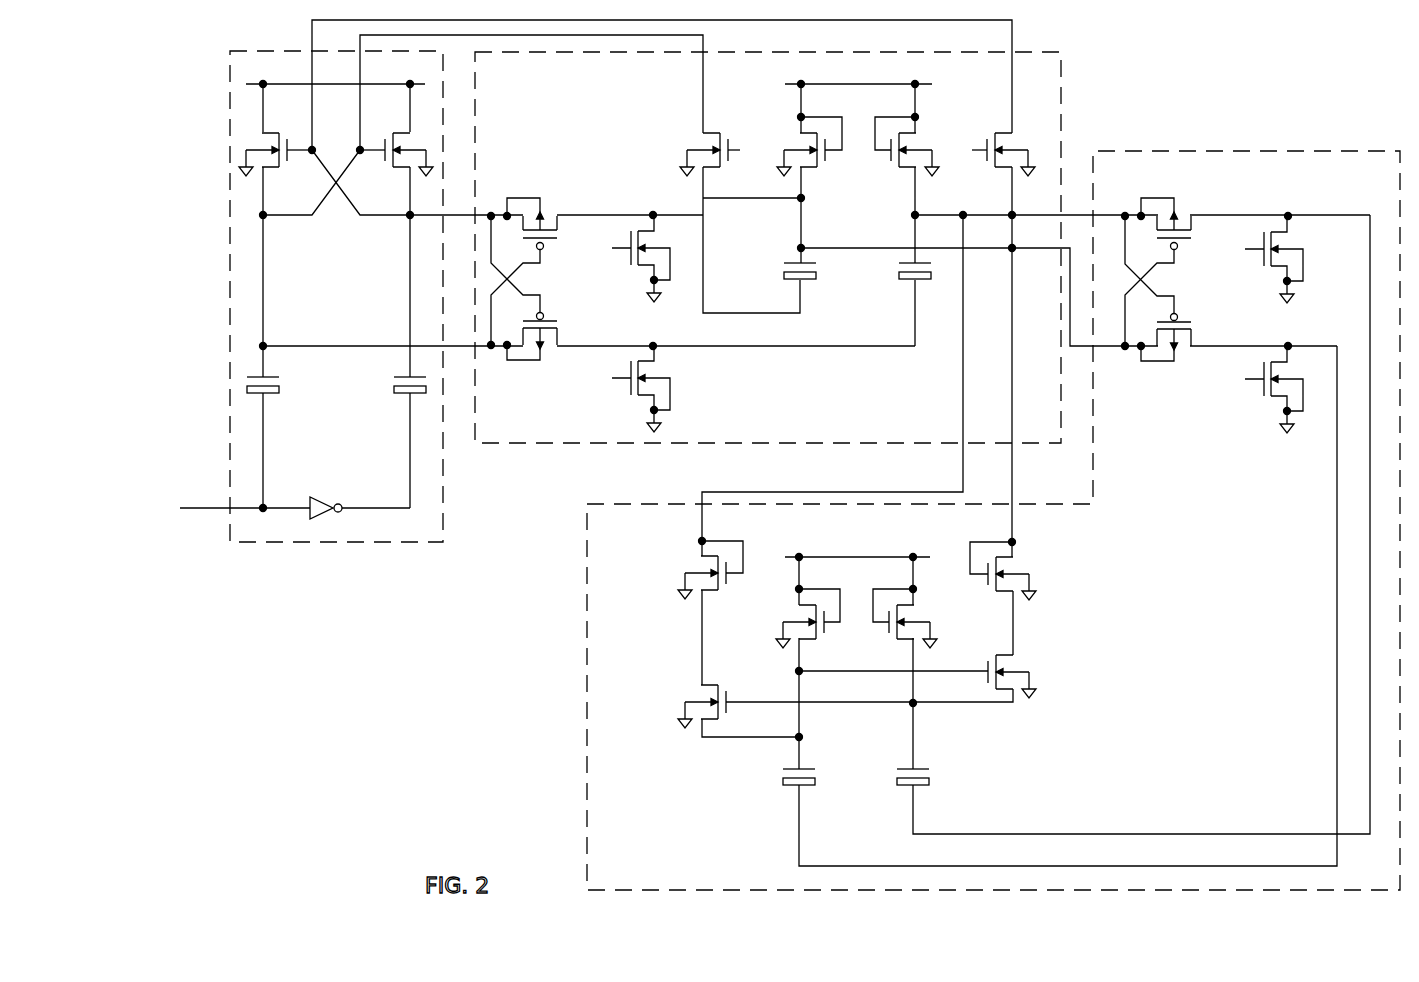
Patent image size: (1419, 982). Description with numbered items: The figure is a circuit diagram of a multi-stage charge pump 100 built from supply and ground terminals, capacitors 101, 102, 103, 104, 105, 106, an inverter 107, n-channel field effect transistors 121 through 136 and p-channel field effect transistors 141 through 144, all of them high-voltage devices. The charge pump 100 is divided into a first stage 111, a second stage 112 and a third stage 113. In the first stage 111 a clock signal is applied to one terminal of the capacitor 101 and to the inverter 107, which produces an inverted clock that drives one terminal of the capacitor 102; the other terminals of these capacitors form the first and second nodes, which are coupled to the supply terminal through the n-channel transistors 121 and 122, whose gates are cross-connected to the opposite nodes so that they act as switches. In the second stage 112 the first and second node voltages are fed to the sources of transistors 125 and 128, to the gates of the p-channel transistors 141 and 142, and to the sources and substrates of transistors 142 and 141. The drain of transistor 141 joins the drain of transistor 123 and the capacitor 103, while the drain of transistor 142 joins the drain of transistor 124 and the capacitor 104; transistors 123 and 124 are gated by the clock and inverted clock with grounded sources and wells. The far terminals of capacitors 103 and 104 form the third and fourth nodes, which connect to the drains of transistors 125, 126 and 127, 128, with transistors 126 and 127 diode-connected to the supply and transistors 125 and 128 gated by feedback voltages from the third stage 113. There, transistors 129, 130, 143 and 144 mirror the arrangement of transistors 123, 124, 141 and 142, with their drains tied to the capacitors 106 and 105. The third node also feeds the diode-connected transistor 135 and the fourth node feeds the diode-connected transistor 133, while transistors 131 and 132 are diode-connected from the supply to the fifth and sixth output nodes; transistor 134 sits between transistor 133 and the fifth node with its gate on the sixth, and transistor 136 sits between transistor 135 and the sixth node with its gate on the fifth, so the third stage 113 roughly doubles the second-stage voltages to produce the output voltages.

The multi-stage charge pump 100 is at (392, 655).
The capacitor 101 is at (270, 397).
The capacitor 102 is at (401, 397).
The capacitor 103 is at (790, 285).
The capacitor 104 is at (905, 285).
The capacitor 105 is at (790, 787).
The capacitor 106 is at (903, 787).
The inverter 107 is at (317, 497).
The first stage 111 is at (358, 542).
The second stage 112 is at (565, 444).
The third stage 113 is at (585, 753).
The n-channel transistor 121 is at (279, 170).
The n-channel transistor 122 is at (393, 170).
The n-channel transistor 123 is at (645, 266).
The n-channel transistor 124 is at (645, 396).
The n-channel transistor 125 is at (718, 138).
The n-channel transistor 126 is at (803, 133).
The n-channel transistor 127 is at (915, 134).
The n-channel transistor 128 is at (995, 168).
The n-channel transistor 129 is at (1270, 268).
The n-channel transistor 130 is at (1270, 398).
The n-channel transistor 131 is at (813, 612).
The n-channel transistor 132 is at (898, 612).
The n-channel transistor 133 is at (716, 563).
The n-channel transistor 134 is at (716, 695).
The n-channel transistor 135 is at (998, 563).
The n-channel transistor 136 is at (998, 657).
The p-channel transistor 141 is at (557, 214).
The p-channel transistor 142 is at (547, 318).
The p-channel transistor 143 is at (1185, 229).
The p-channel transistor 144 is at (1187, 333).